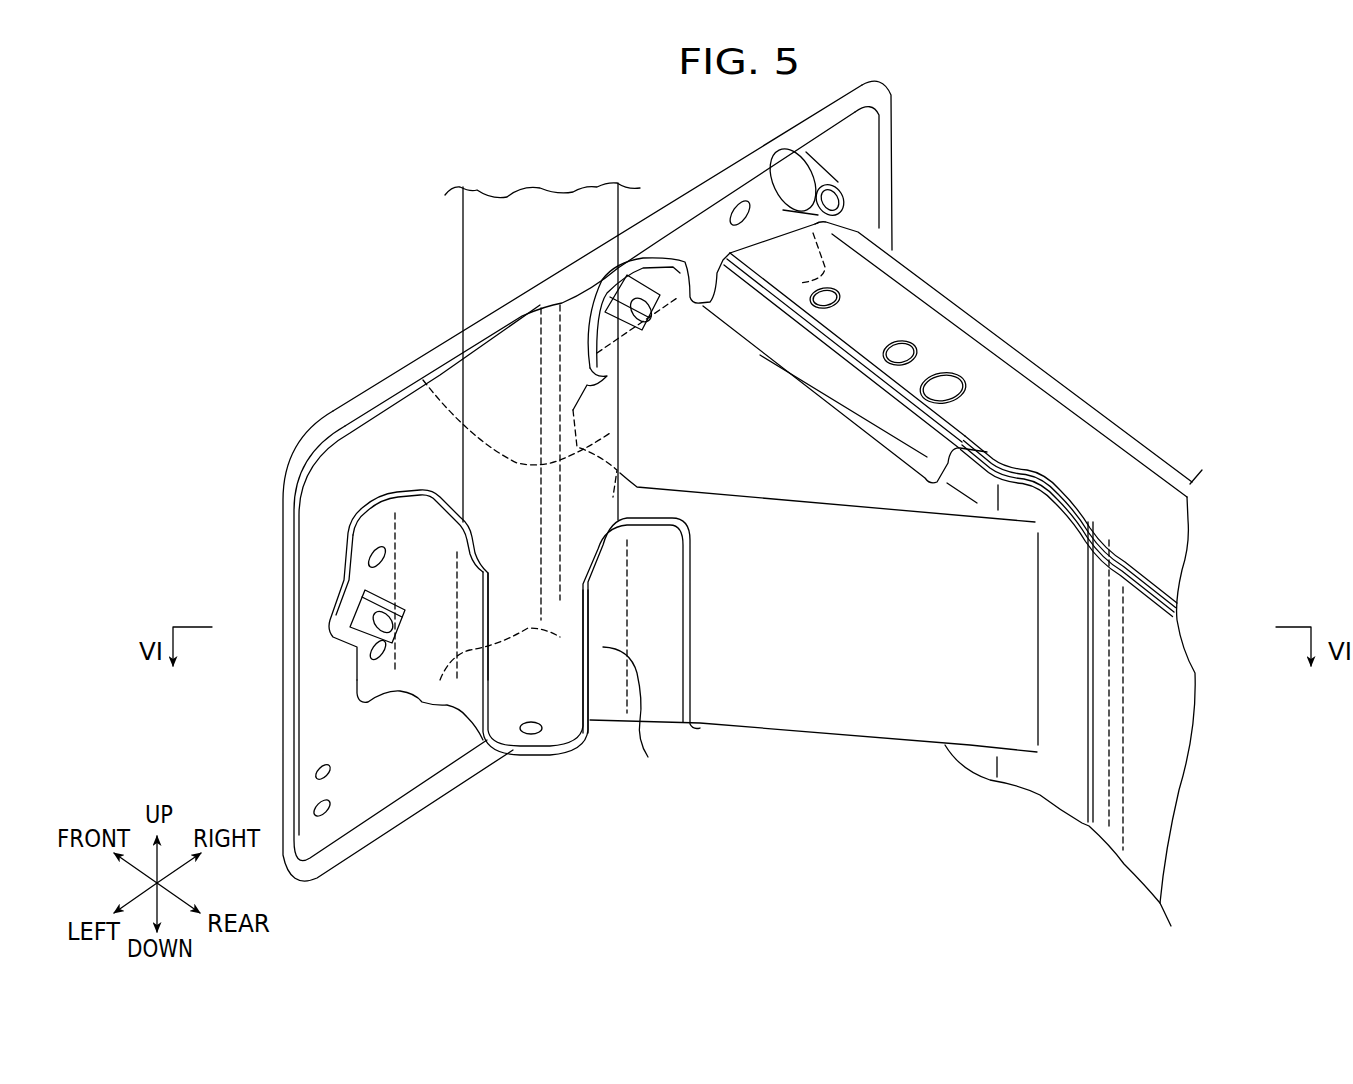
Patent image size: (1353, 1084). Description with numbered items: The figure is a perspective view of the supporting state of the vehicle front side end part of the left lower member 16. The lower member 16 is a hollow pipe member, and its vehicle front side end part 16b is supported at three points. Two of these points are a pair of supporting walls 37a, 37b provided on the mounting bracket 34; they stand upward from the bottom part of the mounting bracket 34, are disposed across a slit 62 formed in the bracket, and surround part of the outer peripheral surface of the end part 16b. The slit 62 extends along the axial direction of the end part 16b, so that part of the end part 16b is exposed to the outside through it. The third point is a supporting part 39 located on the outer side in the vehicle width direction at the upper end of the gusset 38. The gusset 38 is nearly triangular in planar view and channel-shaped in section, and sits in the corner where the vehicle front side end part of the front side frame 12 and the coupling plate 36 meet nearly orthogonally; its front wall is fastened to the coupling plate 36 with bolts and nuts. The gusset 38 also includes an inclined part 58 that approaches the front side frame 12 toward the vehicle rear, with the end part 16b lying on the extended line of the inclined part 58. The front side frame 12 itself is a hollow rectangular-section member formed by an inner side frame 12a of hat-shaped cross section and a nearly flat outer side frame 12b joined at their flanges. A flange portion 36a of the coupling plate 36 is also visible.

The front side frame 12 is at (1034, 574).
The inner side frame 12a is at (1135, 495).
The outer side frame 12b is at (1156, 648).
The lower member 16 is at (422, 431).
The vehicle front side end part 16b is at (446, 464).
The mounting bracket 34 is at (415, 710).
The coupling plate 36 is at (511, 481).
The upper flange of mounting plate 36a is at (447, 343).
The supporting wall 37a is at (641, 653).
The supporting wall 37b is at (514, 708).
The gusset 38 is at (883, 538).
The supporting part 39 is at (420, 380).
The inclined part 58 is at (783, 640).
The slit 62 is at (573, 735).